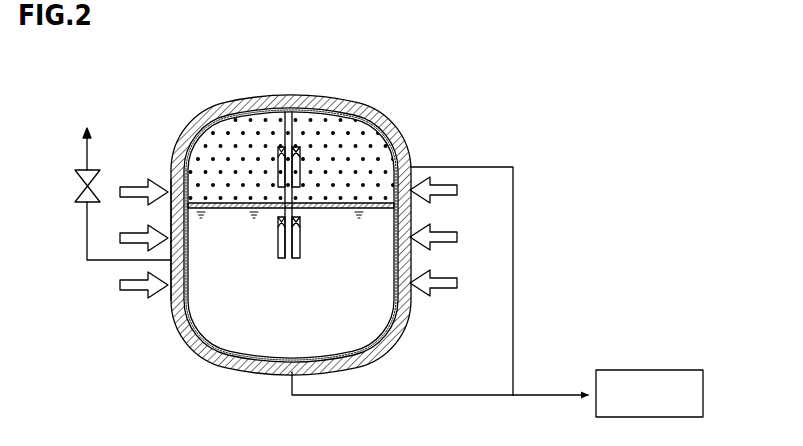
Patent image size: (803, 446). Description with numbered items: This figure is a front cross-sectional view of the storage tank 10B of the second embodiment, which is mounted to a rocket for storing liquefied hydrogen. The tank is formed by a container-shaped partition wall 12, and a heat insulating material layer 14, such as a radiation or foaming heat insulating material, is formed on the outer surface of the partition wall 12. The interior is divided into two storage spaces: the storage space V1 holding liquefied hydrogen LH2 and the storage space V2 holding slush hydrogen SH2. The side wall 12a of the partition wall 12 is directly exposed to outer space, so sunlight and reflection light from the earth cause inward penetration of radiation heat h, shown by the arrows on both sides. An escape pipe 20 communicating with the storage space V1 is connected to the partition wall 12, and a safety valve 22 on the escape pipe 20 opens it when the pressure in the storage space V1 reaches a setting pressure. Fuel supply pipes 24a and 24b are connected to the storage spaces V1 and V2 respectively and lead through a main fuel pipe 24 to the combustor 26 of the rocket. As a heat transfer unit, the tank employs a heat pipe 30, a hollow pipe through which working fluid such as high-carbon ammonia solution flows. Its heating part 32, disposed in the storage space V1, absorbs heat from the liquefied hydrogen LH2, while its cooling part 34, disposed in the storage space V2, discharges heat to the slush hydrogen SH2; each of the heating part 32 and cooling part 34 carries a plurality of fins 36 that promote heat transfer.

The storage tank 10B is at (269, 204).
The partition wall 12 is at (362, 125).
The side wall 12a is at (172, 211).
The heat insulating material layer 14 is at (396, 143).
The escape pipe 20 is at (87, 233).
The safety valve 22 is at (84, 168).
The main fuel pipe 24 is at (540, 394).
The fuel supply pipe 24a is at (447, 394).
The fuel supply pipe 24b is at (443, 167).
The combustor 26 is at (648, 370).
The heat pipe 30 is at (265, 182).
The heating part 32 is at (300, 242).
The cooling part 34 is at (301, 153).
The fins 36 is at (277, 172).
The storage space V1 is at (220, 315).
The storage space V2 is at (213, 165).
The radiation heat h is at (440, 243).
The slush hydrogen SH2 is at (356, 176).
The liquefied hydrogen LH2 is at (304, 305).